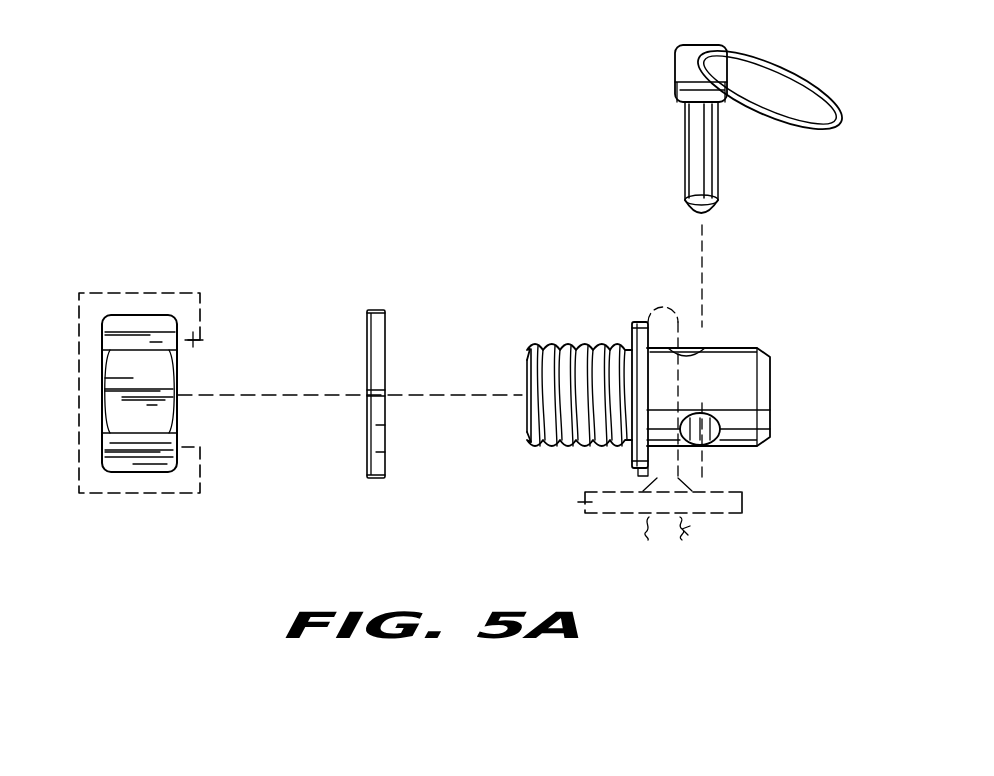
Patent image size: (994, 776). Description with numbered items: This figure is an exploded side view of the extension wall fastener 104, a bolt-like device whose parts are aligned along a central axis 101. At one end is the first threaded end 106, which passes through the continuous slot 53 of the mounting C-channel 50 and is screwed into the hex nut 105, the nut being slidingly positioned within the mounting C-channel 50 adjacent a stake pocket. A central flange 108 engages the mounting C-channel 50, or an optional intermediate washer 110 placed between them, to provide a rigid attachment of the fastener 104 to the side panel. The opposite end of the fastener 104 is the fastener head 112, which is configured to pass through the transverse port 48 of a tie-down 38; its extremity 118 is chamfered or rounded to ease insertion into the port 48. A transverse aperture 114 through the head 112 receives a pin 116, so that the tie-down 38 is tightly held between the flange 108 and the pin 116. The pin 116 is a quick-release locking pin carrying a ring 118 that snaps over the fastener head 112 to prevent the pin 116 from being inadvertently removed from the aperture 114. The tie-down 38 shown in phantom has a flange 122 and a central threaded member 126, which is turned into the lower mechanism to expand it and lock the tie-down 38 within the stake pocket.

The tie-down 38 is at (666, 306).
The transverse port 48 is at (716, 347).
The mounting C-channel 50 is at (130, 292).
The continuous slot 53 is at (203, 338).
The central axis 101 is at (322, 396).
The fastener 104 is at (738, 307).
The hex nut 105 is at (118, 472).
The first threaded end 106 is at (552, 343).
The central flange 108 is at (640, 322).
The intermediate washer 110 is at (373, 310).
The fastener head 112 is at (748, 447).
The transverse aperture 114 is at (720, 428).
The pin 116 is at (718, 186).
The ring 118 is at (833, 84).
The flange 122 is at (583, 502).
The central threaded member 126 is at (690, 530).